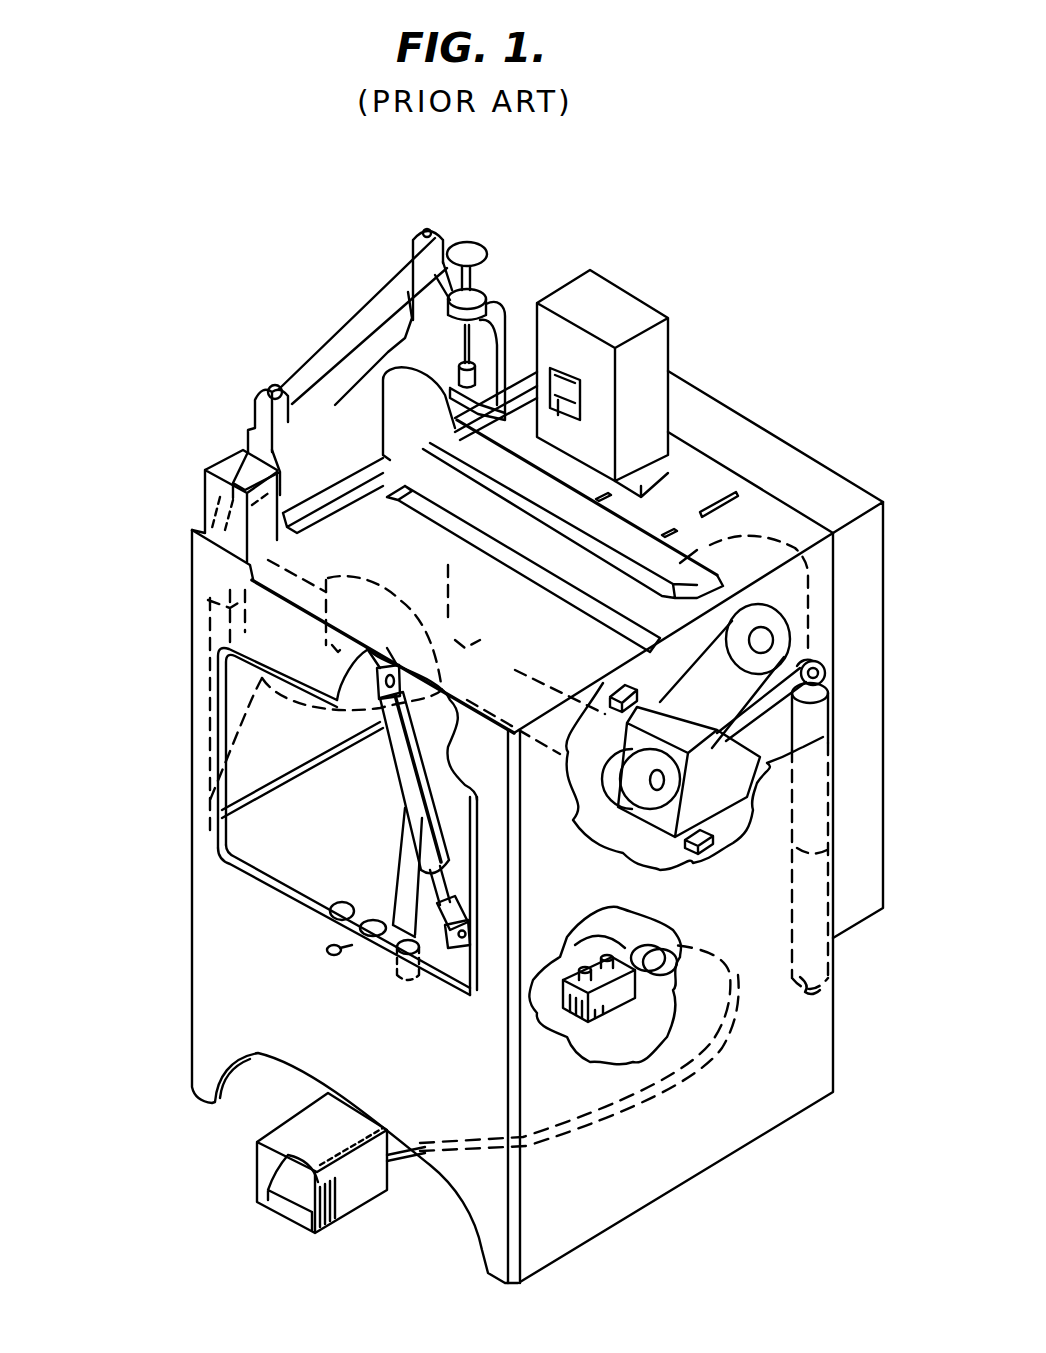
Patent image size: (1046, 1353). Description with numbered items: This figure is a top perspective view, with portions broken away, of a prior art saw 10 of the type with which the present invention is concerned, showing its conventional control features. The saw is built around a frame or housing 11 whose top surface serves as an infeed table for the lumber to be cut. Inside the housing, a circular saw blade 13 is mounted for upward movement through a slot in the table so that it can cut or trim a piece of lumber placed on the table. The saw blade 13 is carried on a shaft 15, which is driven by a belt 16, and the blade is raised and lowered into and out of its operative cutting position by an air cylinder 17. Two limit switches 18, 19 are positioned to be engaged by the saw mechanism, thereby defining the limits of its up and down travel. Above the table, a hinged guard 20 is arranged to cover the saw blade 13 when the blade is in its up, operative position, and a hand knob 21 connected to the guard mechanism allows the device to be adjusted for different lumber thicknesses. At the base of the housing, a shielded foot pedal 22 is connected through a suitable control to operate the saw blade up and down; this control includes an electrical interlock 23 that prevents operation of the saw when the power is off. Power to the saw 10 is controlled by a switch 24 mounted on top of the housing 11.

The prior art saw 10 is at (165, 716).
The frame or housing 11 is at (814, 1015).
The circular saw blade 13 is at (193, 810).
The shaft 15 is at (480, 639).
The belt 16 is at (773, 707).
The air cylinder 17 is at (402, 767).
The limit switch 18 is at (645, 676).
The limit switch 19 is at (693, 858).
The hinged guard 20 is at (323, 343).
The hand knob 21 is at (488, 262).
The shielded foot pedal 22 is at (347, 1203).
The electrical interlock 23 is at (665, 990).
The switch 24 is at (582, 423).